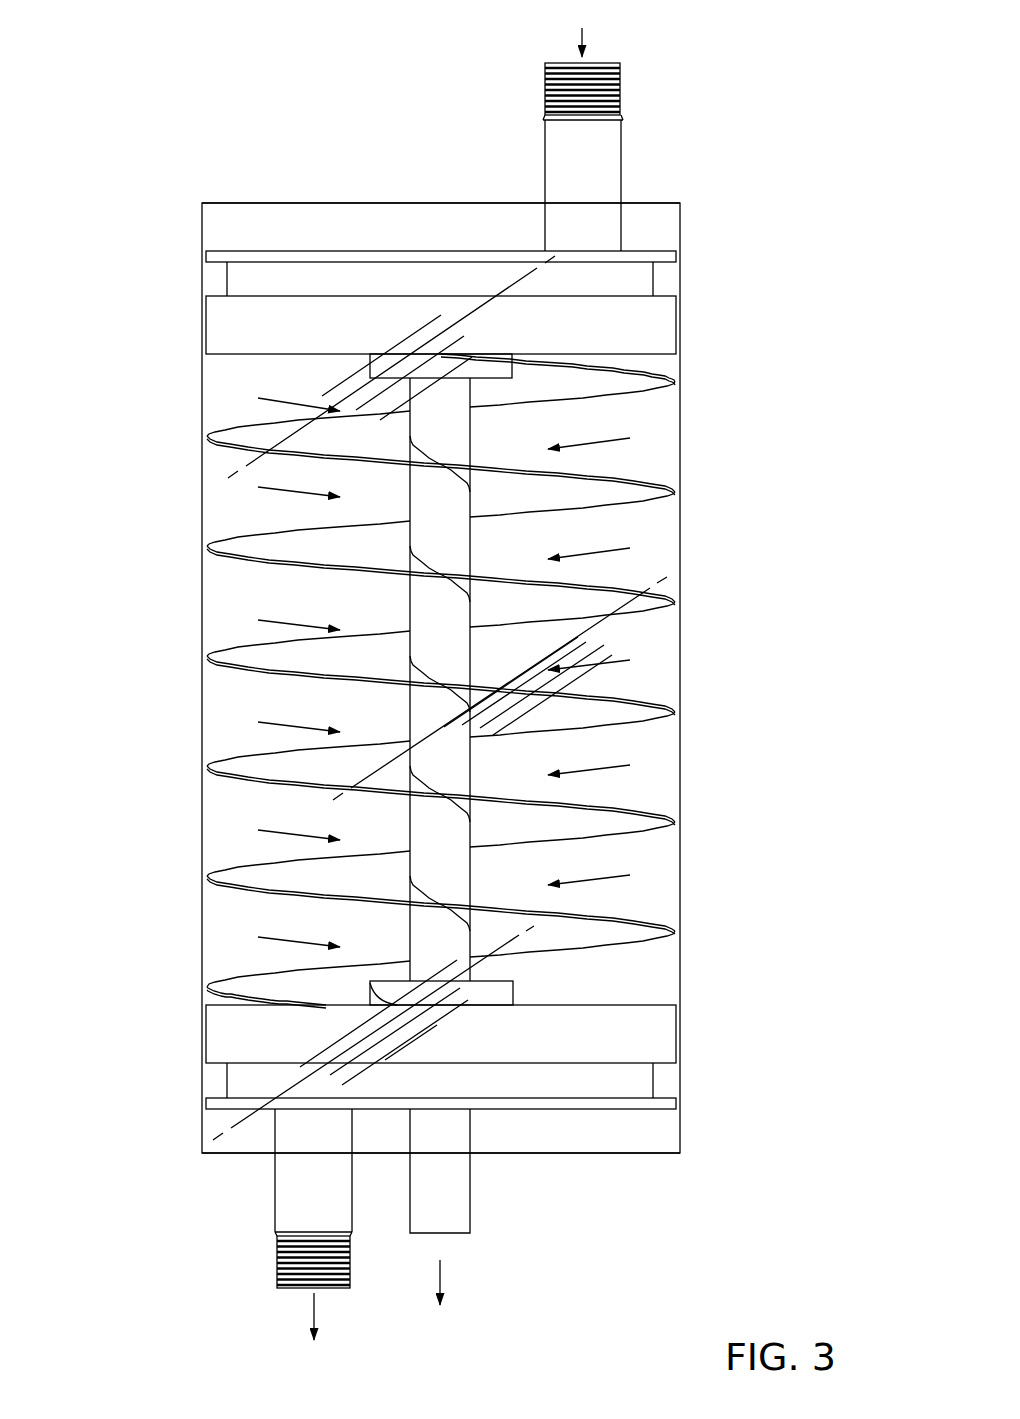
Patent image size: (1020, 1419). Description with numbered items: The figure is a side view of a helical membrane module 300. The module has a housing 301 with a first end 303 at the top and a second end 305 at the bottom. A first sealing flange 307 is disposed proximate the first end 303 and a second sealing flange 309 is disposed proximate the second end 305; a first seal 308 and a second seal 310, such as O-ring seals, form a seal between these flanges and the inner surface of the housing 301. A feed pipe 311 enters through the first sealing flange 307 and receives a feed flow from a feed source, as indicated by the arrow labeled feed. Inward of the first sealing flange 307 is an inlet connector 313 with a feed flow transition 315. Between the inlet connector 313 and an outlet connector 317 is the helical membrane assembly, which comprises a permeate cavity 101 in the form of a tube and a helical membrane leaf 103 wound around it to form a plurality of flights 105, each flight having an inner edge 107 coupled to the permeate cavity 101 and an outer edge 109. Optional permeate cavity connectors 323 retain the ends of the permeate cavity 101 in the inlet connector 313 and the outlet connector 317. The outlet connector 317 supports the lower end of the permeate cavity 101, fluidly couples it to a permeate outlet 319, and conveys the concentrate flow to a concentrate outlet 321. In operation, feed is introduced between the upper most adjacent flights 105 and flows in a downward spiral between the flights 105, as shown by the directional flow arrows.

The helical membrane module 300 is at (130, 97).
The housing 301 is at (200, 405).
The first end 303 is at (268, 203).
The second end 305 is at (615, 1153).
The first sealing flange 307 is at (638, 281).
The first seal 308 is at (210, 278).
The second sealing flange 309 is at (640, 1076).
The second seal 310 is at (210, 1083).
The feed pipe 311 is at (605, 160).
The inlet connector 313 is at (506, 325).
The feed flow transition 315 is at (660, 316).
The outlet connector 317 is at (662, 1038).
The permeate outlet 319 is at (452, 1195).
The concentrate outlet 321 is at (298, 1218).
The permeate cavity connector 323 is at (370, 362).
The permeate cavity 101 is at (472, 443).
The inner edge 107 is at (470, 598).
The helical membrane leaf 103 is at (463, 681).
The flights 105 is at (652, 493).
The outer edge 109 is at (207, 547).